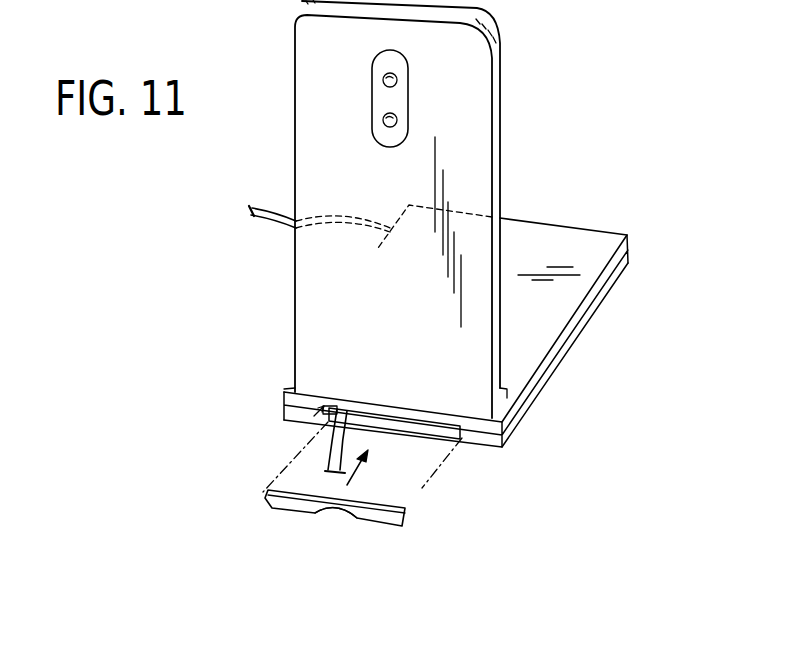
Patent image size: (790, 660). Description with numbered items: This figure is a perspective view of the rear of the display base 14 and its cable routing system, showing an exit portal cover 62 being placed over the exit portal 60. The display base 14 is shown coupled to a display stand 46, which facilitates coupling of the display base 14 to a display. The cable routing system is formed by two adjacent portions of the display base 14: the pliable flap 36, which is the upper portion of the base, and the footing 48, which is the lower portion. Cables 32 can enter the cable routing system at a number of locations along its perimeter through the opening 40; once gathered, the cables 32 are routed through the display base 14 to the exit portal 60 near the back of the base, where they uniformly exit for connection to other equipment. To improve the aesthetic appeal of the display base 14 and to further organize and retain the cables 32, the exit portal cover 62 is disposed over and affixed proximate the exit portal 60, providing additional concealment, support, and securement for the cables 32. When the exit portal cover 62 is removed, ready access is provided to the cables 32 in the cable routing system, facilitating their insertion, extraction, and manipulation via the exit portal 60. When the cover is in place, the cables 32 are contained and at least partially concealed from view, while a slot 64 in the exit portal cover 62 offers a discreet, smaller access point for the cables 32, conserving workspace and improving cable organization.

The display base 14 is at (490, 329).
The cable 32 is at (272, 208).
The pliable flap 36 is at (628, 247).
The opening 40 is at (610, 280).
The display stand 46 is at (585, 52).
The footing 48 is at (583, 327).
The exit portal 60 is at (423, 430).
The exit portal cover 62 is at (372, 493).
The slot 64 is at (335, 513).